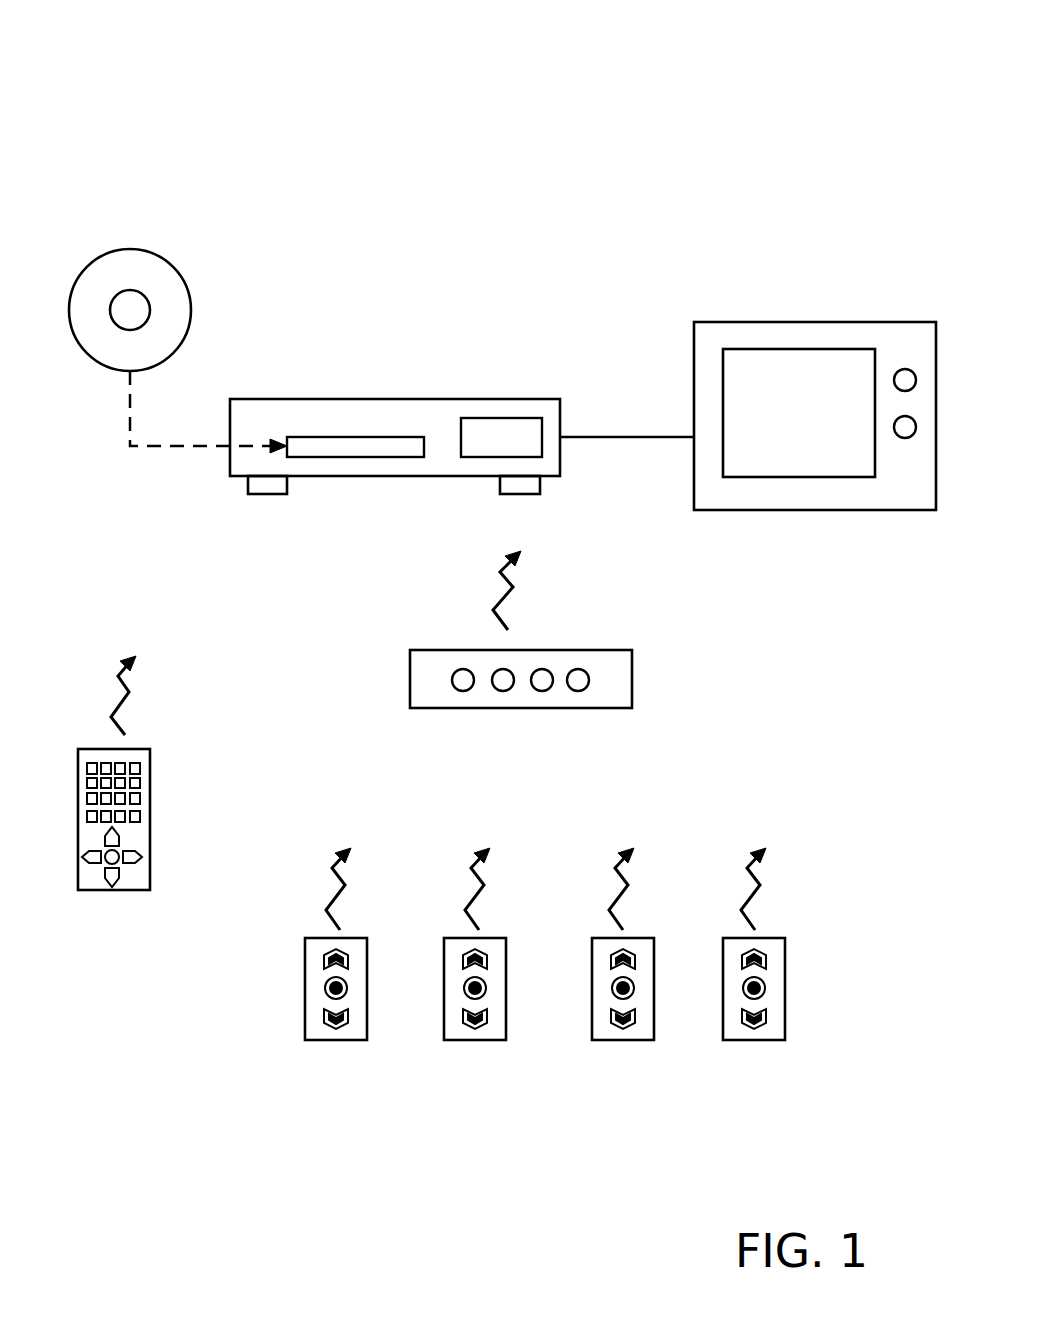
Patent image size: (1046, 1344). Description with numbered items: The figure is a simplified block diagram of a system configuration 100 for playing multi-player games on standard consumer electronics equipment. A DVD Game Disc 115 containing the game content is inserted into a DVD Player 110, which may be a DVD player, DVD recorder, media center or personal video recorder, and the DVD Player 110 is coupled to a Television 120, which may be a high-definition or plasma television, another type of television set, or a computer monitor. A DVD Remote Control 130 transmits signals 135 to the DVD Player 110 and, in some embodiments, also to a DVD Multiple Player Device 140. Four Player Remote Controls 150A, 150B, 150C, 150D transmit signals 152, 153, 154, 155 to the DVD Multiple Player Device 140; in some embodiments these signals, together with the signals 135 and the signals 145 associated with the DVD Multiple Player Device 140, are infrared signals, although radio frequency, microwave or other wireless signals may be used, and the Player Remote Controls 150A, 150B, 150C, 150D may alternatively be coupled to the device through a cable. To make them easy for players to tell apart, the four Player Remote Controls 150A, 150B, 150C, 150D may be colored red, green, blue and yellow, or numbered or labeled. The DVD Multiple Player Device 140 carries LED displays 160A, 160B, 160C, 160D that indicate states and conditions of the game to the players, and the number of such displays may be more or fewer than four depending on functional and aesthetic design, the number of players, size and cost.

The system configuration 100 is at (780, 129).
The DVD player 110 is at (448, 399).
The DVD game disc 115 is at (160, 264).
The television 120 is at (888, 322).
The DVD remote control 130 is at (150, 780).
The signals 135 is at (129, 692).
The DVD multiple player device 140 is at (534, 678).
The signals 145 is at (513, 587).
The player remote control 150A is at (306, 938).
The player remote control 150B is at (449, 938).
The player remote control 150C is at (596, 938).
The player remote control 150D is at (727, 938).
The signal 152 is at (345, 885).
The signal 153 is at (484, 885).
The signal 154 is at (628, 885).
The signal 155 is at (760, 885).
The LED display 160A is at (462, 691).
The LED display 160B is at (503, 691).
The LED display 160C is at (547, 690).
The LED display 160D is at (586, 688).